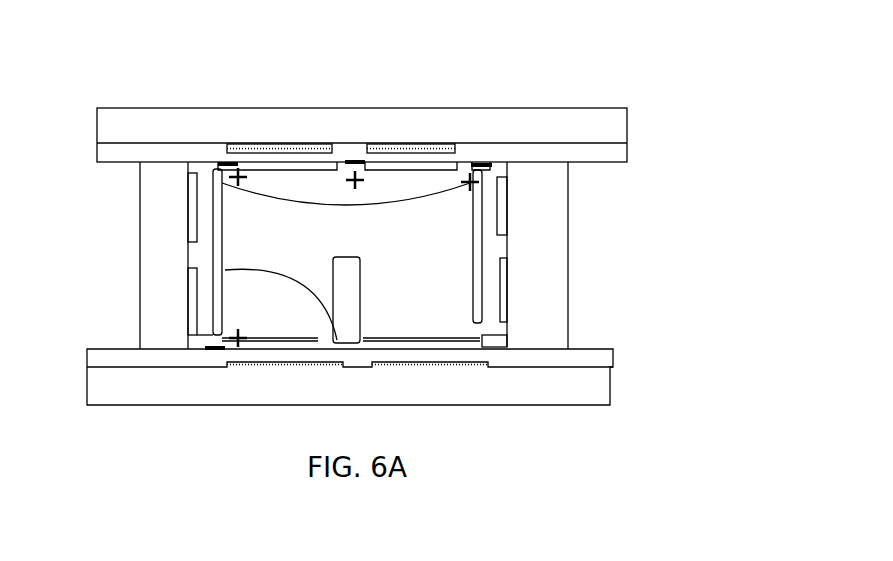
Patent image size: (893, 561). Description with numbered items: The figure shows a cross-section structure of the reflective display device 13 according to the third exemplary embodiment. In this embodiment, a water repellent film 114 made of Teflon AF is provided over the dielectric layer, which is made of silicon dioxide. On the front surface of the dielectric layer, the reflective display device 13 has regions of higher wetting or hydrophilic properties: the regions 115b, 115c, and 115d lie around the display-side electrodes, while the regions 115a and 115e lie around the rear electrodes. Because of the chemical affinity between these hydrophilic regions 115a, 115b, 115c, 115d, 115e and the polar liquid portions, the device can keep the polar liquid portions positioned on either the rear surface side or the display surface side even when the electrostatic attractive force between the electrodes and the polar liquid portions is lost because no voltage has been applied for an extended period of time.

The reflective display device 13 is at (656, 108).
The water repellent film 114 is at (480, 250).
The region 115a is at (213, 333).
The region 115b is at (226, 164).
The region 115c is at (354, 162).
The region 115d is at (477, 165).
The region 115e is at (477, 333).